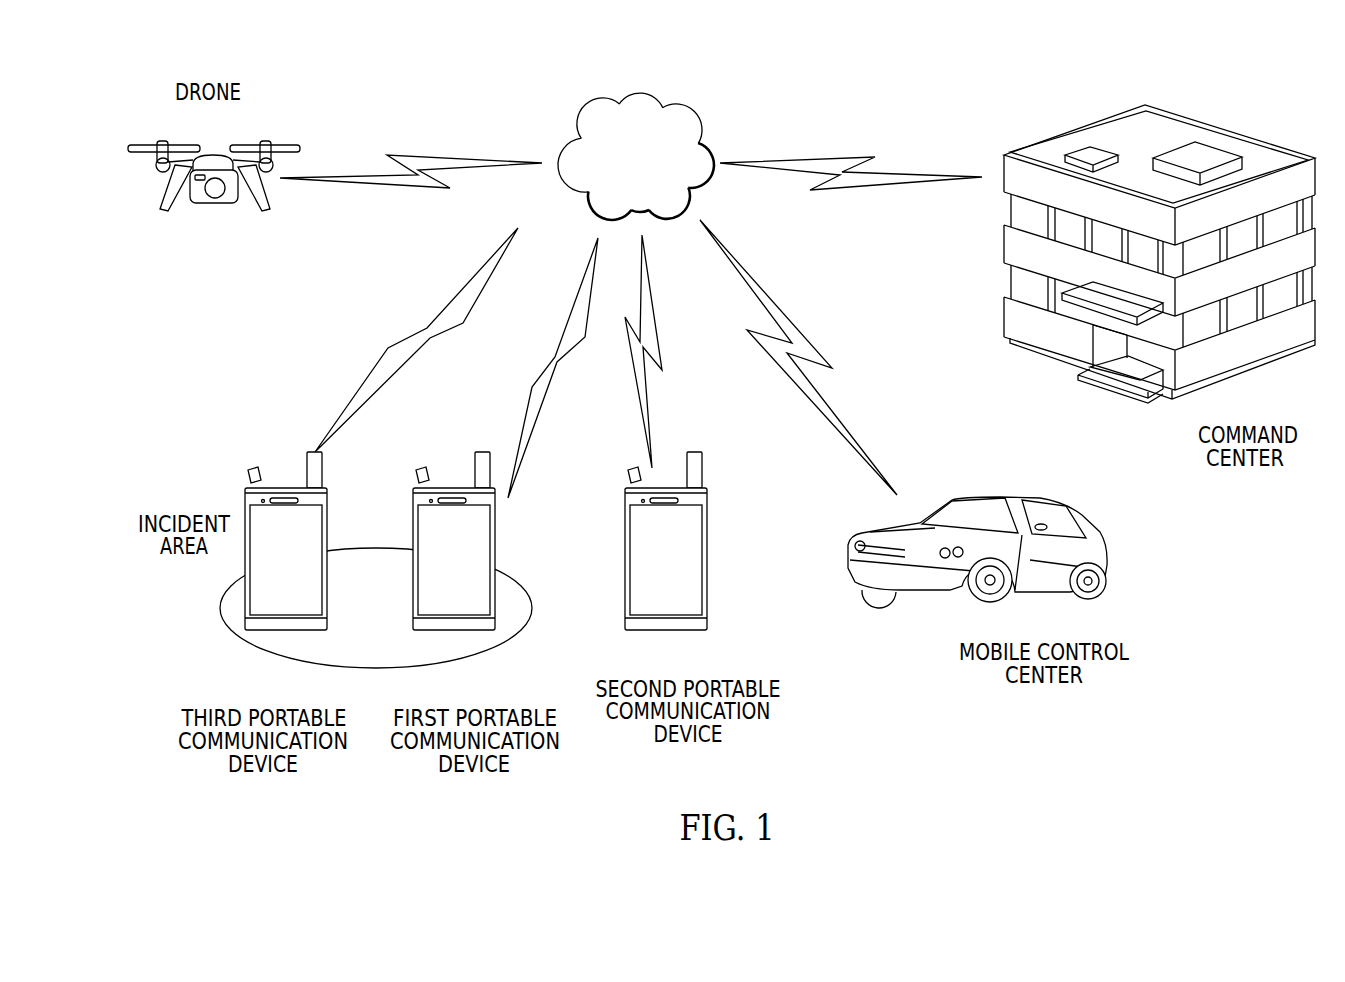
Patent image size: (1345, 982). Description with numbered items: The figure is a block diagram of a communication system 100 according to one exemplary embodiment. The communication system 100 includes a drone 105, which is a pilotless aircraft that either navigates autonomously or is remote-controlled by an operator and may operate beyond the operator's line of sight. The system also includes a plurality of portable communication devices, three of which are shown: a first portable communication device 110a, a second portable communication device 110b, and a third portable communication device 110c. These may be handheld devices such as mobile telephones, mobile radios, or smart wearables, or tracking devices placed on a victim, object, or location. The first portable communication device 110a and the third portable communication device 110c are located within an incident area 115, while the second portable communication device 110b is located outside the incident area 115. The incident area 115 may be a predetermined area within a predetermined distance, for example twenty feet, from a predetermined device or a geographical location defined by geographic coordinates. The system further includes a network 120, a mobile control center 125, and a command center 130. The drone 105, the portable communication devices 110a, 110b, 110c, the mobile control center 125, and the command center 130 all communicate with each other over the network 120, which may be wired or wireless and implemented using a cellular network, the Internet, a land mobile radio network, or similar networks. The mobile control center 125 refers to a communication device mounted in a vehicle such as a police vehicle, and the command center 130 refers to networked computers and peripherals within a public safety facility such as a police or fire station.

The communication system 100 is at (1248, 58).
The drone 105 is at (213, 153).
The first portable communication device 110a is at (455, 632).
The second portable communication device 110b is at (665, 632).
The third portable communication device 110c is at (287, 632).
The incident area 115 is at (222, 597).
The network 120 is at (564, 124).
The mobile control center 125 is at (1040, 590).
The command center 130 is at (1240, 373).